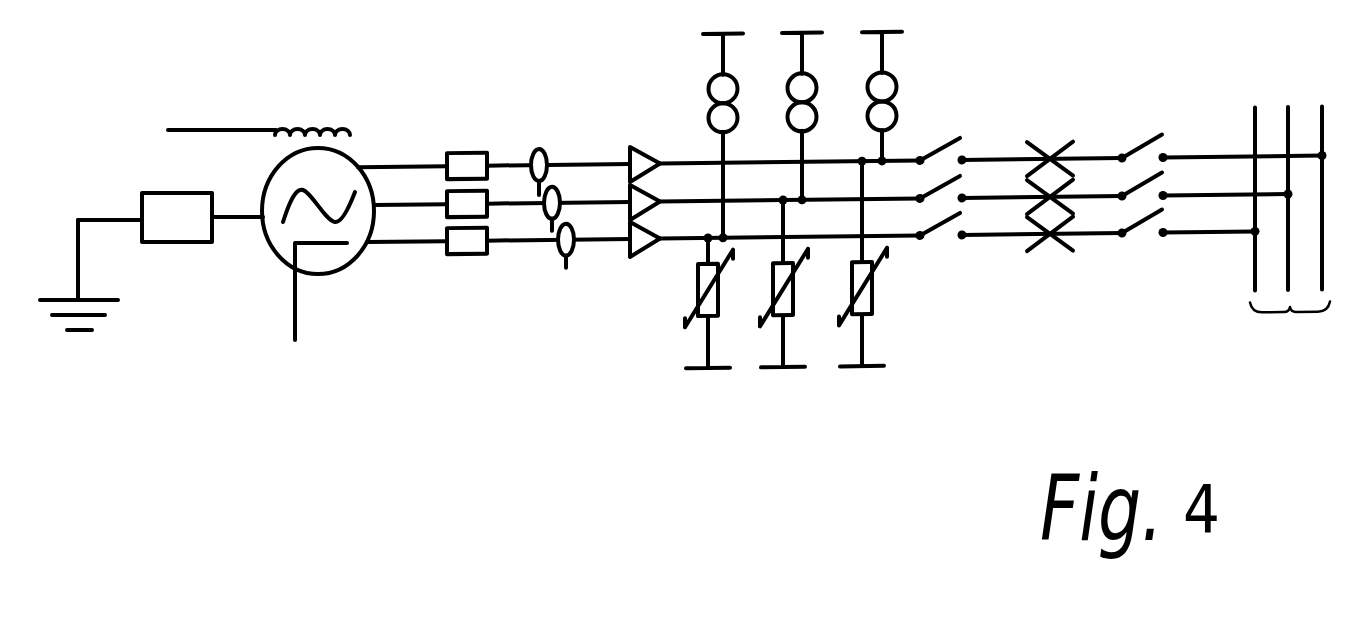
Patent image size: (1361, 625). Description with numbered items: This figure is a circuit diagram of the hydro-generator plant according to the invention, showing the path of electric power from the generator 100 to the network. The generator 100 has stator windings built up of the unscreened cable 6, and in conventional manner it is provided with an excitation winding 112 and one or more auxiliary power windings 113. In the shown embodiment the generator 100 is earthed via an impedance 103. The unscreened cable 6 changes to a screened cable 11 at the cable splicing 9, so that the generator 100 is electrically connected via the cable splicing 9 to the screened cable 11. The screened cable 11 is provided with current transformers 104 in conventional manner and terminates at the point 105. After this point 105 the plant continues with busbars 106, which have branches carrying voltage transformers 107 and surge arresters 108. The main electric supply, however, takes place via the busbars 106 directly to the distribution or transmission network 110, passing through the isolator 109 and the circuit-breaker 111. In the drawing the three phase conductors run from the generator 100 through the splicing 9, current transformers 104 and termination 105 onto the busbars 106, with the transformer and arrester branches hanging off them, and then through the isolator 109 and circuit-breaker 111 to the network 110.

The cable 6 is at (397, 166).
The cable splicing 9 is at (468, 255).
The screened cable 11 is at (578, 165).
The generator 100 is at (272, 250).
The impedance 103 is at (177, 243).
The current transformers 104 is at (540, 151).
The cable termination 105 is at (643, 152).
The busbars 106 is at (685, 243).
The voltage transformers 107 is at (897, 92).
The surge arresters 108 is at (878, 310).
The isolator 109 is at (940, 238).
The distribution or transmission network 110 is at (1246, 230).
The circuit-breaker 111 is at (1053, 150).
The excitation winding 112 is at (247, 130).
The auxiliary power winding 113 is at (297, 312).